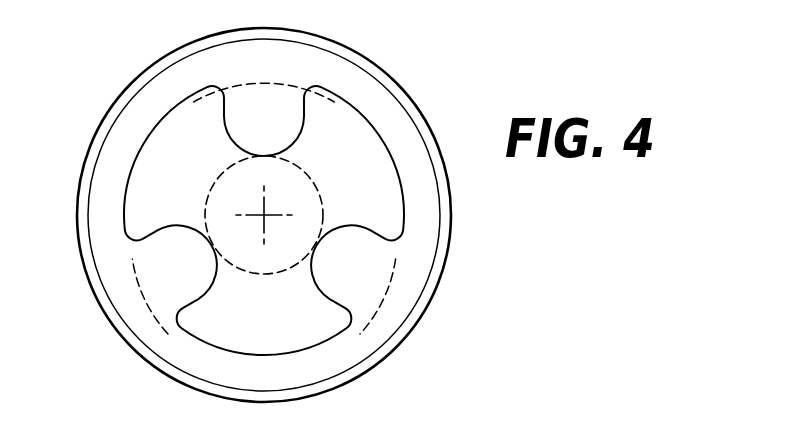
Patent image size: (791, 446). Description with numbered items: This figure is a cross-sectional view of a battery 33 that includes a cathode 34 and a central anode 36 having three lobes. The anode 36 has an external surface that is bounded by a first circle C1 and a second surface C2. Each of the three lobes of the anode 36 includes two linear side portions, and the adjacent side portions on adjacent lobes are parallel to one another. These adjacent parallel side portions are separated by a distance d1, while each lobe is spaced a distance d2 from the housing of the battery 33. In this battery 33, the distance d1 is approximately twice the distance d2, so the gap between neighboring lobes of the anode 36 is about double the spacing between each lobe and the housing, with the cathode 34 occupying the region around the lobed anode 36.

The battery 33 is at (106, 50).
The cathode 34 is at (410, 270).
The anode 36 is at (163, 178).
The first circle C1 is at (297, 68).
The second surface C2 is at (304, 167).
The distance between adjacent side portions d1 is at (294, 106).
The distance from lobe to housing d2 is at (385, 142).